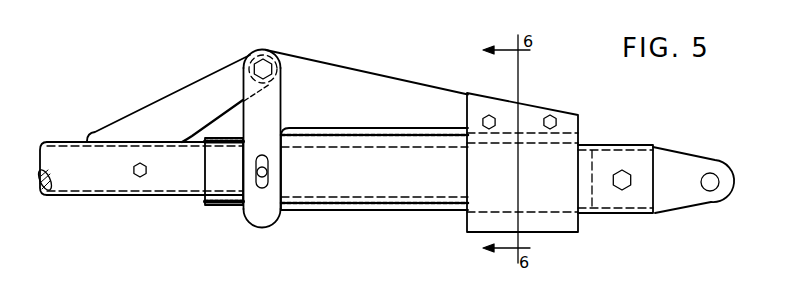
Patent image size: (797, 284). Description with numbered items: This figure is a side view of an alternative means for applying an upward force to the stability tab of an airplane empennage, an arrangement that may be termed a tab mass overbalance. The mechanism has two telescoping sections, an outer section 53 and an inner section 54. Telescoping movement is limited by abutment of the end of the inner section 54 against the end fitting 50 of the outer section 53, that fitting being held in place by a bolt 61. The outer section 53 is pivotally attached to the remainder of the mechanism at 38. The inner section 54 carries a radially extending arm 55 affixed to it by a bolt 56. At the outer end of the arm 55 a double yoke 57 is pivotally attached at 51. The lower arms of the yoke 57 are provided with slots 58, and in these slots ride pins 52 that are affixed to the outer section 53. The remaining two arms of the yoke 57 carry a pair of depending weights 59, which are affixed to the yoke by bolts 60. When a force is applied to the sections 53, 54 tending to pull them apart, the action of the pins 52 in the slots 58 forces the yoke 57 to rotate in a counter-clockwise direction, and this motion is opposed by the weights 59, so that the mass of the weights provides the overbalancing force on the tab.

The pivotal attachment 38 is at (711, 182).
The end fitting 50 is at (667, 162).
The pivot 51 is at (266, 70).
The pins 52 is at (282, 192).
The outer section 53 is at (623, 146).
The inner section 54 is at (68, 150).
The radially extending arm 55 is at (175, 107).
The bolt 56 is at (143, 178).
The double yoke 57 is at (352, 85).
The slots 58 is at (263, 190).
The depending weights 59 is at (552, 222).
The bolts 60 is at (553, 117).
The bolt 61 is at (624, 187).